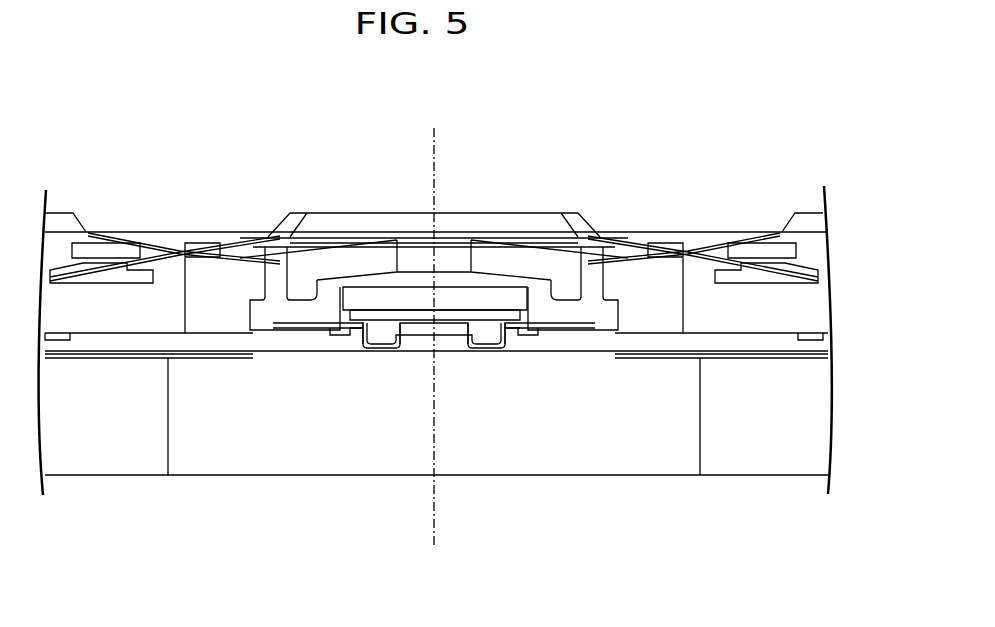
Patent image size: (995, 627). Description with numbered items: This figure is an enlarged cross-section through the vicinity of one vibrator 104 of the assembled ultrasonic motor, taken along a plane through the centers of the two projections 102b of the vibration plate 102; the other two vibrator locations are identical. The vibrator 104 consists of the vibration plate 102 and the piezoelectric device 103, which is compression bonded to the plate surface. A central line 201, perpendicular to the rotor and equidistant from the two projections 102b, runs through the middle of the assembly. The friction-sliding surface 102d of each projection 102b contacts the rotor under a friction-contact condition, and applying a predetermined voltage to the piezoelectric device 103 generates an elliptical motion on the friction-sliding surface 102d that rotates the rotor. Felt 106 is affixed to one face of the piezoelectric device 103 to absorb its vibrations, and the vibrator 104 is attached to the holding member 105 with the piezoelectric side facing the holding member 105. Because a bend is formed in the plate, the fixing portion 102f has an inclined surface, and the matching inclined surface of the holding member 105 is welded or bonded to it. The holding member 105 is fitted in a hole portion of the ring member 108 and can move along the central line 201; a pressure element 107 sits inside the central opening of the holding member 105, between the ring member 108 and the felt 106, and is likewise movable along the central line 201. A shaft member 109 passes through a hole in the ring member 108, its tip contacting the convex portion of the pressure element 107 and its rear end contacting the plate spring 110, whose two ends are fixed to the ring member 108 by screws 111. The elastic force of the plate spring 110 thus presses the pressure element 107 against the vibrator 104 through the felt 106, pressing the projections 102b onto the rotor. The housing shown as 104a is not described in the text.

The vibration plate 102 is at (447, 328).
The projections 102b is at (350, 322).
The friction-sliding surface 102d is at (373, 340).
The fixing portion 102f is at (283, 335).
The piezoelectric device 103 is at (480, 323).
The vibrator 104 is at (608, 152).
The housing 104a is at (200, 462).
The holding member 105 is at (333, 313).
The felt 106 is at (392, 317).
The pressure element 107 is at (415, 293).
The ring member 108 is at (220, 277).
The shaft member 109 is at (447, 247).
The plate spring 110 is at (170, 247).
The screw 111 is at (112, 253).
The central line 201 is at (434, 535).